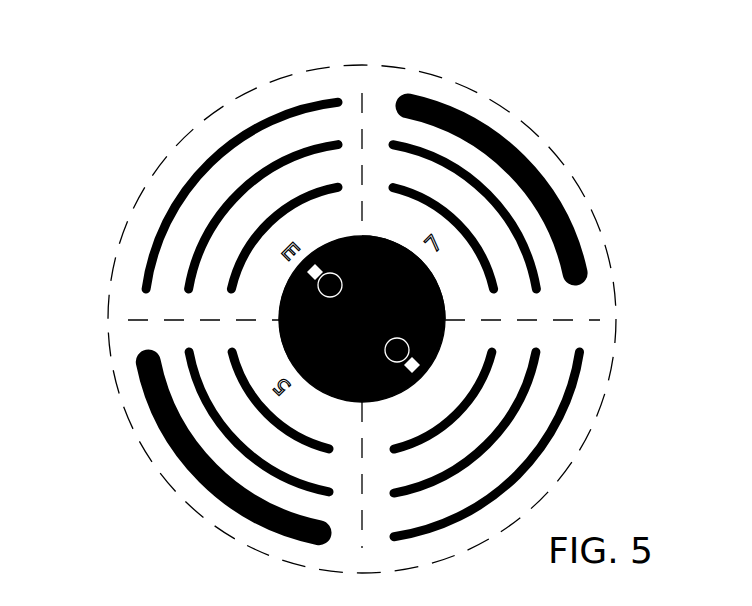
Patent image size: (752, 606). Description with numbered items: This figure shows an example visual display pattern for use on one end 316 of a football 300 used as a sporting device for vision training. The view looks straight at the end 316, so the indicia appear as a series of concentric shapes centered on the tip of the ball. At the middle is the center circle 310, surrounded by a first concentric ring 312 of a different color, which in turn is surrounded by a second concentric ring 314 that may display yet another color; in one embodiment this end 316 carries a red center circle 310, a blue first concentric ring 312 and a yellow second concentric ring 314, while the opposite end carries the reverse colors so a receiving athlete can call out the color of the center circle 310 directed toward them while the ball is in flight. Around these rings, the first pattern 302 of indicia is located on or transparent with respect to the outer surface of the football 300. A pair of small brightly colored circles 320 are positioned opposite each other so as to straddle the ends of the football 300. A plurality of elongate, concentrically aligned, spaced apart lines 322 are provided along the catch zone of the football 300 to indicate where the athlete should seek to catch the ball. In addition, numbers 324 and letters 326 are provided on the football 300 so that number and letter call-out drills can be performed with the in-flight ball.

The football 300 is at (612, 391).
The pattern 302 is at (520, 147).
The center circle 310 is at (322, 388).
The first concentric ring 312 is at (291, 369).
The second concentric ring 314 is at (280, 347).
The end 316 is at (411, 249).
The small brightly colored circles 320 is at (281, 299).
The elongate, concentrically aligned, spaced apart lines 322 is at (592, 350).
The numbers 324 is at (417, 242).
The letters 326 is at (450, 402).